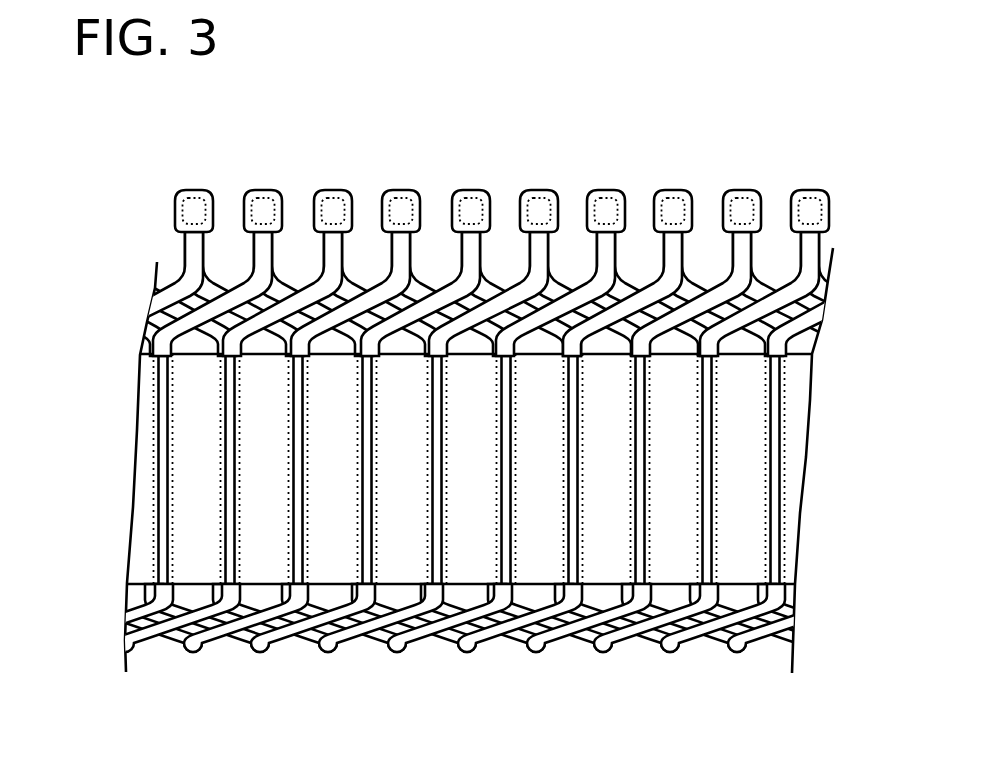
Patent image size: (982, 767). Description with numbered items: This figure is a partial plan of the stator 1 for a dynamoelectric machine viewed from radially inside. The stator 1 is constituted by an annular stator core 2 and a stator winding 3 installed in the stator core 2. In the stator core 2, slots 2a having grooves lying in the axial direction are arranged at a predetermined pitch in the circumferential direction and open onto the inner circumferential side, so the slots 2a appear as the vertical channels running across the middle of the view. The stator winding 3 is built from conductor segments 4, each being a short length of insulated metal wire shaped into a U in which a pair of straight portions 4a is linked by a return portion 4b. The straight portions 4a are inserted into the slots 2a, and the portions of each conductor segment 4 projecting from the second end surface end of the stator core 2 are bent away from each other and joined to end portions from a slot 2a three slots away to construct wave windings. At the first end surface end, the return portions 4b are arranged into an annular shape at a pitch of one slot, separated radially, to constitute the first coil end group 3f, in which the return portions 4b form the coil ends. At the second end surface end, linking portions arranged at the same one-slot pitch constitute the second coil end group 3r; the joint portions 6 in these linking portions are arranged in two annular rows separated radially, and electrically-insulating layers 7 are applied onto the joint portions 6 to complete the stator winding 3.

The stator 1 is at (141, 170).
The stator core 2 is at (818, 458).
The slots 2a is at (783, 411).
The stator winding 3 is at (830, 260).
The second coil end group 3r is at (838, 297).
The first coil end group 3f is at (808, 626).
The conductor segment 4 is at (806, 335).
The straight portions 4a is at (773, 592).
The return portion 4b is at (762, 657).
The joint portions 6 is at (318, 196).
The electrically-insulating layers 7 is at (354, 195).